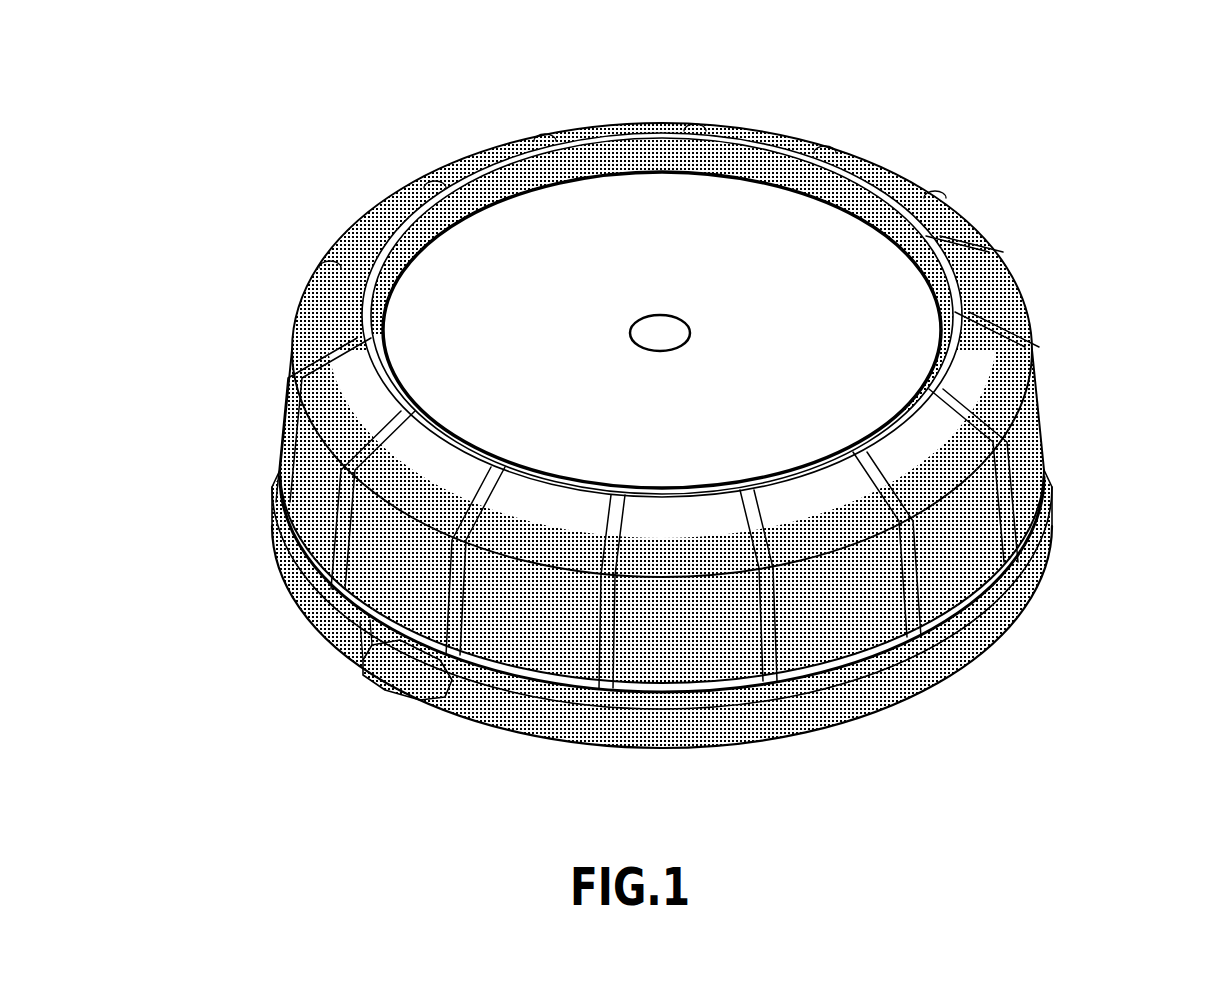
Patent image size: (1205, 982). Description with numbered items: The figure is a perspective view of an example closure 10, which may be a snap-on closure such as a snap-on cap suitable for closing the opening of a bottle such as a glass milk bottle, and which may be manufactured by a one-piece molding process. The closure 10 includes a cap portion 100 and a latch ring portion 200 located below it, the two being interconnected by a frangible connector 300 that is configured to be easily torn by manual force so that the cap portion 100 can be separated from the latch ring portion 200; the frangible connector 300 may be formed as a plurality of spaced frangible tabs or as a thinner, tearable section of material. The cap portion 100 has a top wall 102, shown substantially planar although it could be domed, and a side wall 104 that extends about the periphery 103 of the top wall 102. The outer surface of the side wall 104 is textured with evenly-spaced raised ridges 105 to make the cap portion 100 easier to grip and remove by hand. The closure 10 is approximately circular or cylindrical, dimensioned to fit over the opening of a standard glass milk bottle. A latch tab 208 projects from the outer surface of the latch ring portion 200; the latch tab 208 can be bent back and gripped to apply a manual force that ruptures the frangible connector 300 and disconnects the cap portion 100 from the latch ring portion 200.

The closure 10 is at (620, 440).
The cap portion 100 is at (628, 368).
The top wall 102 is at (726, 222).
The periphery 103 is at (868, 222).
The side wall 104 is at (322, 480).
The raised ridges 105 is at (992, 388).
The latch ring portion 200 is at (590, 651).
The latch tab 208 is at (392, 692).
The frangible connector 300 is at (948, 630).